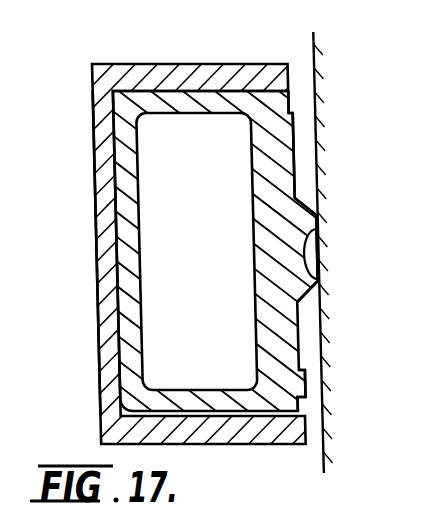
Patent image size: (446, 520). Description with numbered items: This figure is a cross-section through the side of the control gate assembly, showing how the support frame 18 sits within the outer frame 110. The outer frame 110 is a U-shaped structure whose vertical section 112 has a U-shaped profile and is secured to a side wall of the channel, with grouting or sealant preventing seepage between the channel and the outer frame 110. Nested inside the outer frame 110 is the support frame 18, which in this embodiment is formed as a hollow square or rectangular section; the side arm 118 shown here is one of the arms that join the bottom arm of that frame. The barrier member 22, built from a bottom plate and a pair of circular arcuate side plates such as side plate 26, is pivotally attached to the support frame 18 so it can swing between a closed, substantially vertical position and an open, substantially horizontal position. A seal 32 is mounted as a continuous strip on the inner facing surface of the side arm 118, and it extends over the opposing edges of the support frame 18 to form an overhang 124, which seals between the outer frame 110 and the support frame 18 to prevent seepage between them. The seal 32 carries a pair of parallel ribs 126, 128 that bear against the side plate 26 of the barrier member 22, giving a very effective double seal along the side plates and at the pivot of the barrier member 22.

The barrier member 22 is at (320, 62).
The side plate 26 is at (322, 373).
The outer frame 110 is at (94, 312).
The vertical section 112 is at (108, 381).
The side arm 118 is at (136, 257).
The support frame 18 is at (141, 181).
The overhang 124 is at (290, 96).
The seal 32 is at (298, 136).
The rib 126 is at (319, 222).
The rib 128 is at (319, 281).